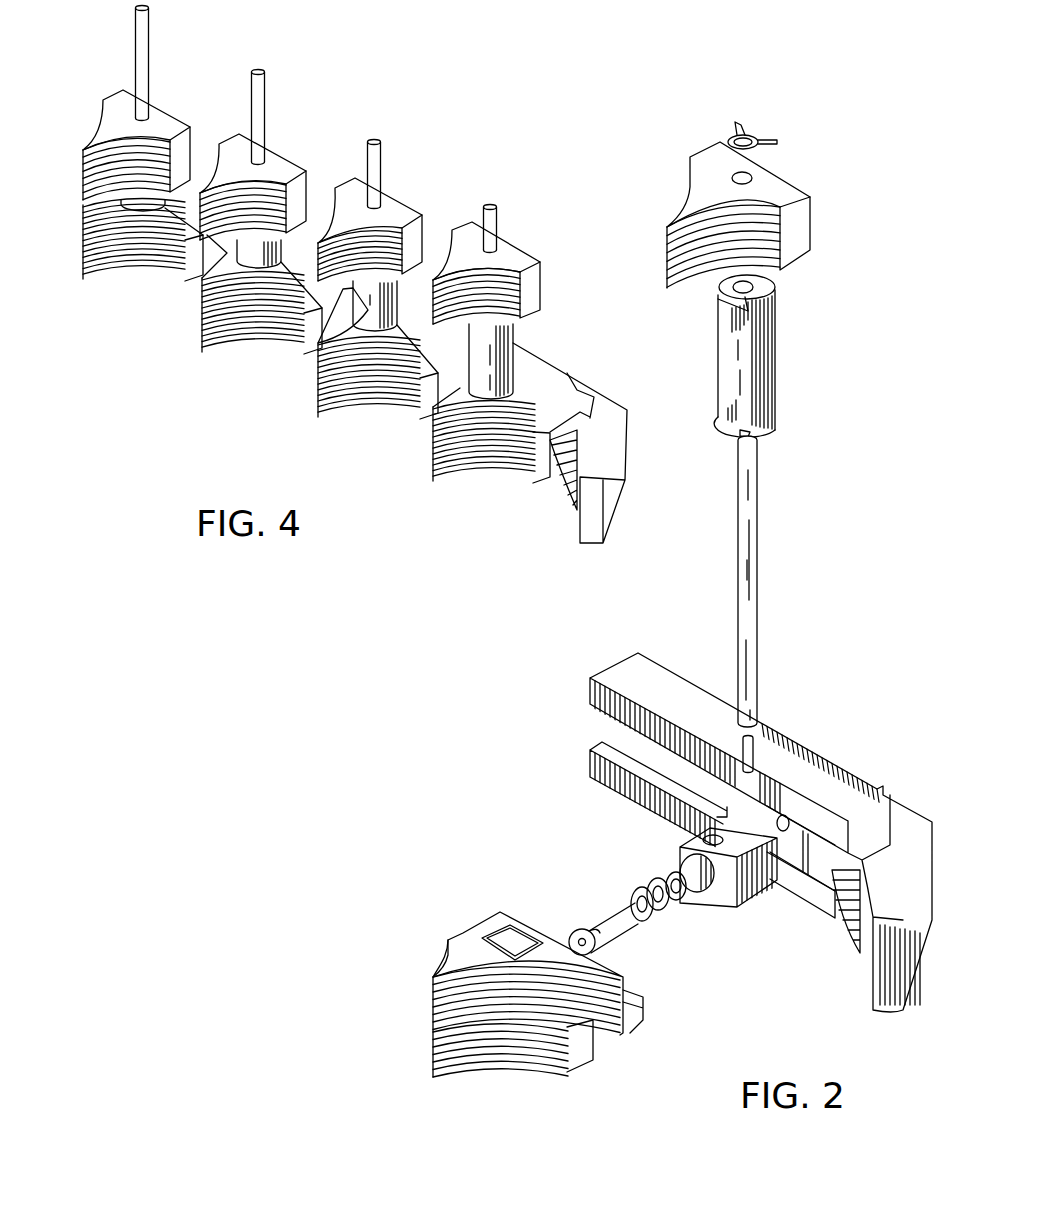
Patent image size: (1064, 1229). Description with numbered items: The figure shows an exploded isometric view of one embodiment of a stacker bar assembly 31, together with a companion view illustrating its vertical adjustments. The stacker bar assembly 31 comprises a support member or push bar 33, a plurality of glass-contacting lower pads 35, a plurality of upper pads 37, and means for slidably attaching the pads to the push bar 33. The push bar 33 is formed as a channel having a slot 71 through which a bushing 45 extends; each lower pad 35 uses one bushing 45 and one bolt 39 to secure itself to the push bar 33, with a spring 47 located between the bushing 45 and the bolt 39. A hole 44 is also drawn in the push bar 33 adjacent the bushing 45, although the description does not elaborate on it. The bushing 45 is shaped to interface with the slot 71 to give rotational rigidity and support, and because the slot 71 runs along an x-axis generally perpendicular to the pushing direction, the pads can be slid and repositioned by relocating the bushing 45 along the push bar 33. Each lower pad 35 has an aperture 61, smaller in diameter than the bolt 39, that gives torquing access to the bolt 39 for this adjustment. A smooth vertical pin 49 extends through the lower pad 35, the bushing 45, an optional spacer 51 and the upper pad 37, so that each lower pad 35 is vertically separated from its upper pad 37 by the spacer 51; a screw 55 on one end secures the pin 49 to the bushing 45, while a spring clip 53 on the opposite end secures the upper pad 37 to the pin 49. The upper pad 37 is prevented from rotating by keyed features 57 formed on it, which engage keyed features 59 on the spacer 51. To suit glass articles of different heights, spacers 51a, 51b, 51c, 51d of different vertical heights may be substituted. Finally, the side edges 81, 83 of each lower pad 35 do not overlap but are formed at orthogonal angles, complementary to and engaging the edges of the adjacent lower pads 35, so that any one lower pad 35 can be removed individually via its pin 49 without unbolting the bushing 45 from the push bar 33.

In FIG. 2, the stacker bar assembly 31 is at (657, 617).
In FIG. 2, the push bar 33 is at (838, 765).
In FIG. 4, the lower pad 35 is at (108, 280).
In FIG. 2, the lower pad 35 is at (447, 953).
In FIG. 4, the upper pad 37 is at (122, 92).
In FIG. 2, the upper pad 37 is at (797, 217).
In FIG. 2, the bolt 39 is at (623, 937).
In FIG. 2, the hole 44 is at (793, 843).
In FIG. 2, the bushing 45 is at (747, 883).
In FIG. 2, the spring 47 is at (682, 898).
In FIG. 2, the pin 49 is at (747, 565).
In FIG. 2, the spacer 51 is at (727, 347).
In FIG. 4, the spacer 51a is at (150, 190).
In FIG. 4, the spacer 51b is at (278, 240).
In FIG. 4, the spacer 51c is at (393, 290).
In FIG. 4, the spacer 51d is at (497, 330).
In FIG. 2, the spring clip 53 is at (753, 133).
In FIG. 2, the screw 55 is at (752, 750).
In FIG. 2, the keyed feature 57 is at (509, 935).
In FIG. 2, the keyed feature 59 is at (730, 297).
In FIG. 2, the aperture 61 is at (433, 1025).
In FIG. 2, the slot 71 is at (610, 728).
In FIG. 2, the side edge 81 is at (642, 1020).
In FIG. 2, the side edge 83 is at (578, 1053).